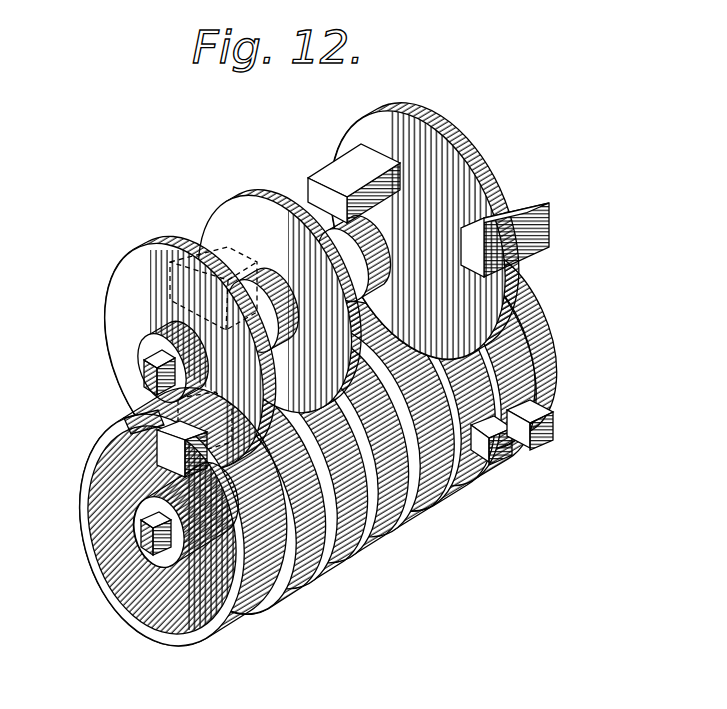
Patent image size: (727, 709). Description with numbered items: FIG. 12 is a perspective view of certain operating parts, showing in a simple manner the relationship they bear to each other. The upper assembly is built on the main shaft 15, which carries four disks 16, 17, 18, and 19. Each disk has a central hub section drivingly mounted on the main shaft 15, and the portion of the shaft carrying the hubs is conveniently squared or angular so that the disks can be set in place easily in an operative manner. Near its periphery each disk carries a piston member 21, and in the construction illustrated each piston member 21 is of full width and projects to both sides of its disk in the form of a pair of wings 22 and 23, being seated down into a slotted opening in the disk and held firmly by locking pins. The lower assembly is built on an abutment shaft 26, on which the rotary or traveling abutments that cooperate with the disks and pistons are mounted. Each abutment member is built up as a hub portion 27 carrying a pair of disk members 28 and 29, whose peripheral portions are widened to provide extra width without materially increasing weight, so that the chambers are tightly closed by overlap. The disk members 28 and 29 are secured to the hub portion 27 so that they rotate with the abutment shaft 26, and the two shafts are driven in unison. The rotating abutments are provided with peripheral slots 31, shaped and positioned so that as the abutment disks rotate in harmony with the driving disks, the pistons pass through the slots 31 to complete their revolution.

The main shaft 15 is at (142, 374).
The disk 16 is at (120, 298).
The disk 17 is at (212, 218).
The disk 18 is at (290, 178).
The disk 19 is at (428, 114).
The piston member 21 is at (330, 178).
The wing 22 is at (297, 152).
The wing 23 is at (352, 164).
The abutment shaft 26 is at (150, 542).
The hub portion 27 is at (176, 557).
The disk member 28 is at (205, 602).
The disk member 29 is at (284, 612).
The peripheral slot 31 is at (514, 384).